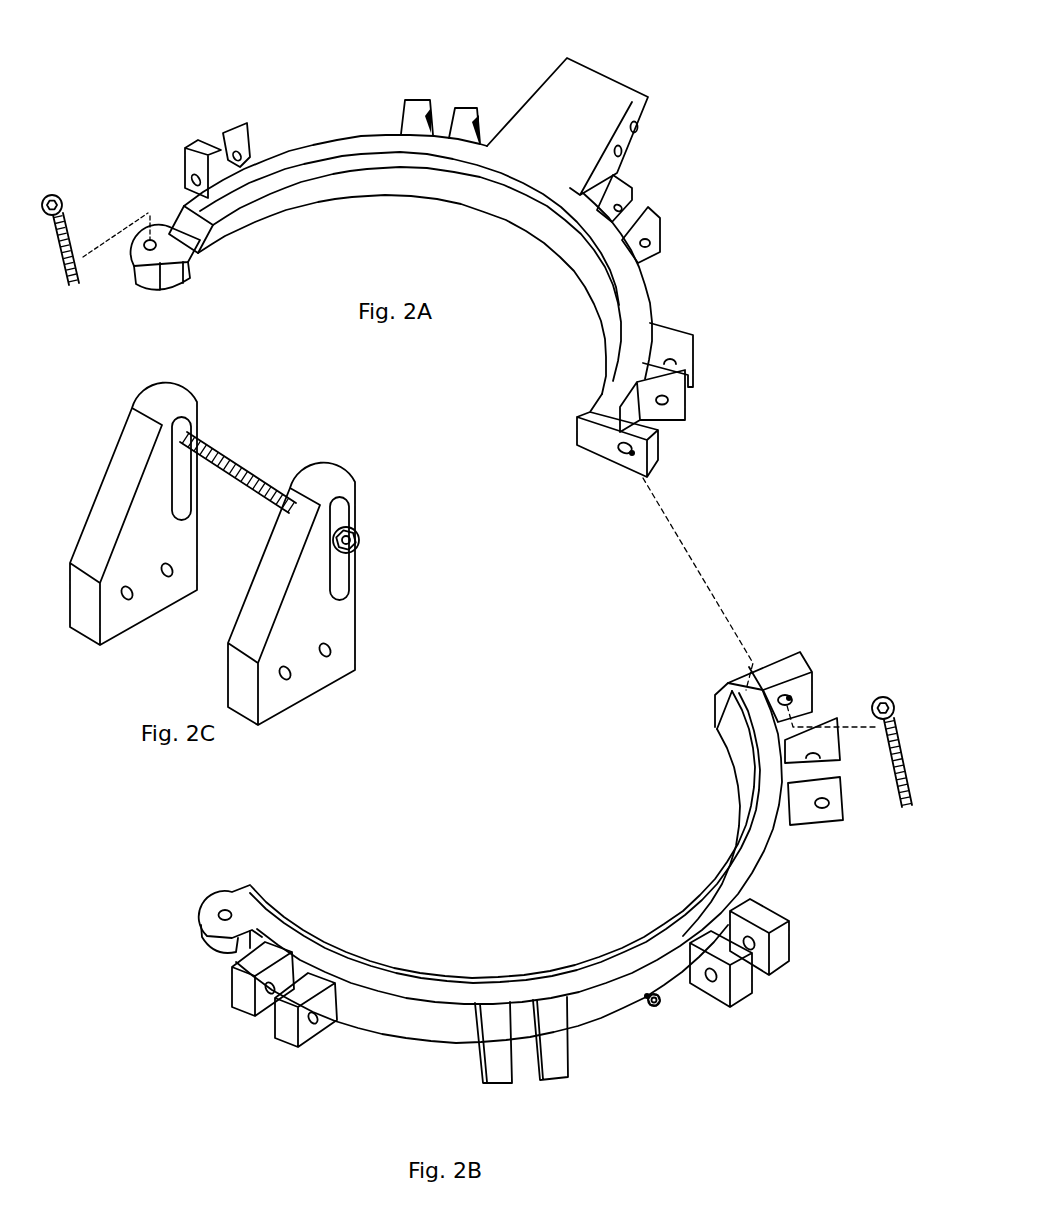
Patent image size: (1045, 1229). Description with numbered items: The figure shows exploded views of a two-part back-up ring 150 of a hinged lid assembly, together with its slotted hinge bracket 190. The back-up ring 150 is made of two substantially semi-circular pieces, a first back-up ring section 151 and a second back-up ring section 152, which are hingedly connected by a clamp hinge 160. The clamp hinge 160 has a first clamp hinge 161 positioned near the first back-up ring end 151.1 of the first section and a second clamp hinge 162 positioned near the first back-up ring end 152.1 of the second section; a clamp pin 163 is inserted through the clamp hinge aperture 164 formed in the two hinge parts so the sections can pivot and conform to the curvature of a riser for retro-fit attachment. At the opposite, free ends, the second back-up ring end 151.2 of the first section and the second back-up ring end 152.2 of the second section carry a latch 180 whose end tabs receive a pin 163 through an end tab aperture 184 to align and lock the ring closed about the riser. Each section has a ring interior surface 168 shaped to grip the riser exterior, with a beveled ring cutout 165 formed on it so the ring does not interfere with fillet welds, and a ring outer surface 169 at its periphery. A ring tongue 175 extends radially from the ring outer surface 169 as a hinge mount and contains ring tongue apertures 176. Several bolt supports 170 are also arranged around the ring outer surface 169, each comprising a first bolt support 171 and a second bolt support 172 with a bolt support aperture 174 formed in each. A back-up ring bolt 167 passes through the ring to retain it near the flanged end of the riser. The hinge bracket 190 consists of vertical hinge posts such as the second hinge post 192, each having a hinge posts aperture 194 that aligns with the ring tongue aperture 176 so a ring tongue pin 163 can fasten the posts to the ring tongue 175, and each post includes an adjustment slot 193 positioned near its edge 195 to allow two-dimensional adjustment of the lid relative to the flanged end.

In FIG. 2A, the back-up ring 150 is at (612, 57).
In FIG. 2B, the first back-up ring section 151 is at (192, 892).
In FIG. 2B, the first back-up ring end 151.1 is at (222, 964).
In FIG. 2B, the second back-up ring end 151.2 is at (710, 690).
In FIG. 2A, the second back-up ring section 152 is at (765, 208).
In FIG. 2A, the first back-up ring end 152.1 is at (143, 294).
In FIG. 2A, the second back-up ring end 152.2 is at (620, 473).
In FIG. 2A, the clamp hinge 160 is at (194, 218).
In FIG. 2B, the clamp hinge 160 is at (190, 869).
In FIG. 2B, the first clamp hinge 161 is at (228, 898).
In FIG. 2A, the second clamp hinge 162 is at (150, 238).
In FIG. 2A, the clamp pin 163 is at (52, 196).
In FIG. 2C, the clamp pin 163 is at (248, 466).
In FIG. 2B, the clamp pin 163 is at (898, 718).
In FIG. 2A, the clamp hinge aperture 164 is at (160, 244).
In FIG. 2B, the clamp hinge aperture 164 is at (223, 916).
In FIG. 2A, the ring cutout 165 is at (315, 168).
In FIG. 2B, the ring cutout 165 is at (521, 1040).
In FIG. 2B, the back-up ring bolt 167 is at (656, 1008).
In FIG. 2A, the ring interior surface 168 is at (425, 195).
In FIG. 2B, the ring interior surface 168 is at (470, 962).
In FIG. 2A, the ring outer surface 169 is at (352, 120).
In FIG. 2B, the ring outer surface 169 is at (382, 1020).
In FIG. 2A, the bolt support 170 is at (700, 378).
In FIG. 2B, the bolt support 170 is at (760, 1012).
In FIG. 2A, the first bolt support 171 is at (688, 400).
In FIG. 2A, the second bolt support 172 is at (677, 343).
In FIG. 2A, the bolt support aperture 174 is at (625, 210).
In FIG. 2A, the ring tongue 175 is at (558, 97).
In FIG. 2A, the ring tongue aperture 176 is at (622, 152).
In FIG. 2A, the latch 180 is at (592, 410).
In FIG. 2B, the latch 180 is at (745, 692).
In FIG. 2A, the end tab aperture 184 is at (695, 566).
In FIG. 2C, the hinge bracket 190 is at (382, 470).
In FIG. 2C, the second hinge post 192 is at (330, 628).
In FIG. 2C, the adjustment slot 193 is at (190, 427).
In FIG. 2C, the hinge posts aperture 194 is at (167, 578).
In FIG. 2C, the edge 195 is at (350, 597).